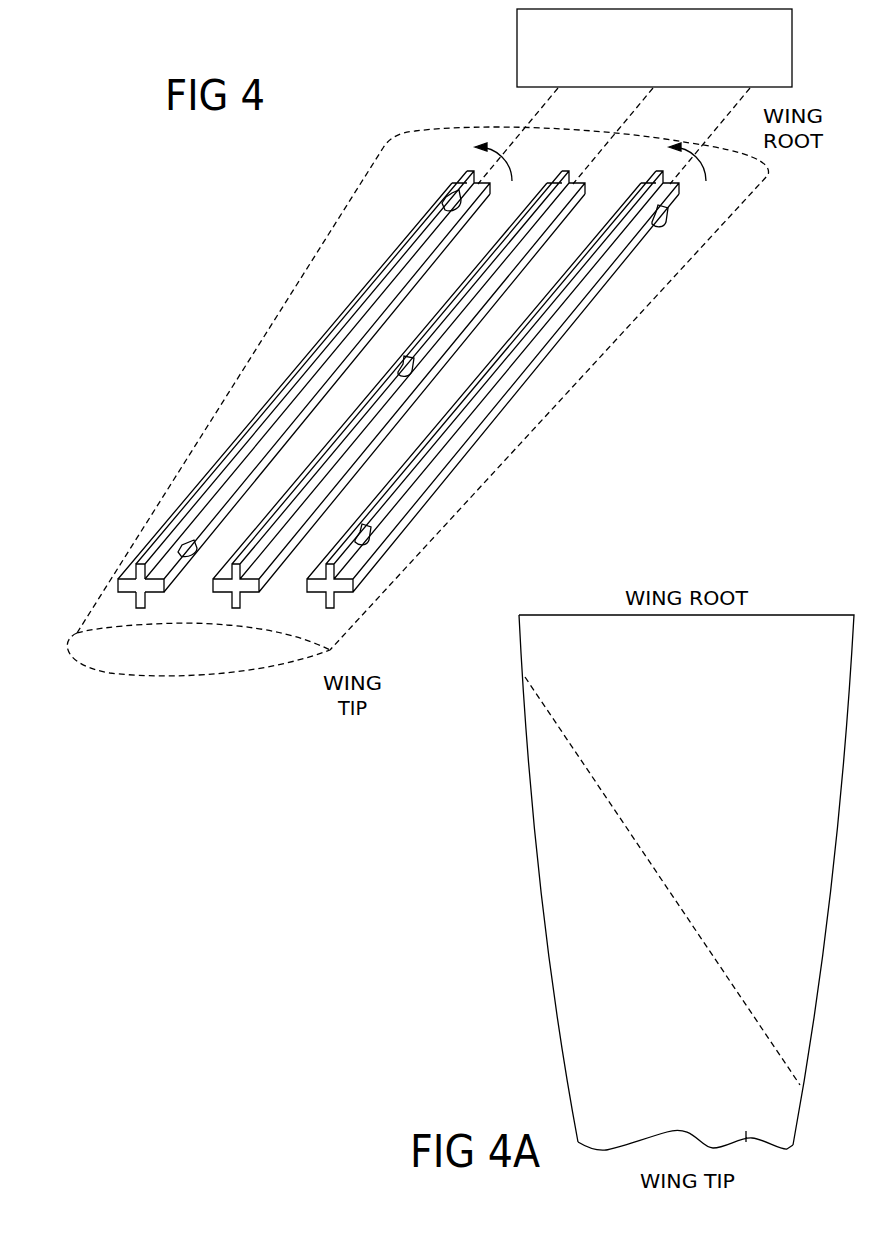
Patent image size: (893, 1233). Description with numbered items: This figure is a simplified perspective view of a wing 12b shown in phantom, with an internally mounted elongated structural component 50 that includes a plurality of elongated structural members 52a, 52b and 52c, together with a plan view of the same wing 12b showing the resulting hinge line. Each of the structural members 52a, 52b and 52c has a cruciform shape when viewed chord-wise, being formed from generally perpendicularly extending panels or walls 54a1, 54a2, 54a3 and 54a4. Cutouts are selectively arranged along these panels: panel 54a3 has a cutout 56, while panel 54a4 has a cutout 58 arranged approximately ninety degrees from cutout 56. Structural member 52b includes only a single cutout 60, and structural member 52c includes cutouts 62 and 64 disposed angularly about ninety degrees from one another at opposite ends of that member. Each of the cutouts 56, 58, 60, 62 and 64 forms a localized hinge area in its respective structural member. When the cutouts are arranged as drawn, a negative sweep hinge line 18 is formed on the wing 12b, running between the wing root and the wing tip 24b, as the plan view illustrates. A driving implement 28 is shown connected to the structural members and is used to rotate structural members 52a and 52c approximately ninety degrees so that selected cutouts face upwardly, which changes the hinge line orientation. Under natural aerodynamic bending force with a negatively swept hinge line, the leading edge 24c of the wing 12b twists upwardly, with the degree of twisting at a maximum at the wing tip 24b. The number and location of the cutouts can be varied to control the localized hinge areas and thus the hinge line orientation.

In FIG. 4, the driving implement 28 is at (517, 47).
In FIG. 4, the elongated structural component 50 is at (297, 236).
In FIG. 4, the structural member 52a is at (260, 446).
In FIG. 4, the structural member 52b is at (386, 444).
In FIG. 4, the structural member 52c is at (509, 447).
In FIG. 4, the panel 54a1 is at (118, 584).
In FIG. 4, the panel 54a2 is at (137, 603).
In FIG. 4, the panel 54a3 is at (157, 597).
In FIG. 4, the panel 54a4 is at (137, 572).
In FIG. 4, the cutout 56 is at (184, 545).
In FIG. 4, the cutout 58 is at (447, 200).
In FIG. 4, the cutout 60 is at (415, 362).
In FIG. 4, the cutout 62 is at (370, 528).
In FIG. 4, the cutout 64 is at (665, 225).
In FIG. 4, the wing 12b is at (613, 343).
In FIG. 4A, the wing 12b is at (543, 882).
In FIG. 4A, the negative sweep hinge line 18 is at (638, 840).
In FIG. 4A, the wing tip 24b is at (747, 1140).
In FIG. 4A, the leading edge 24c is at (575, 1113).